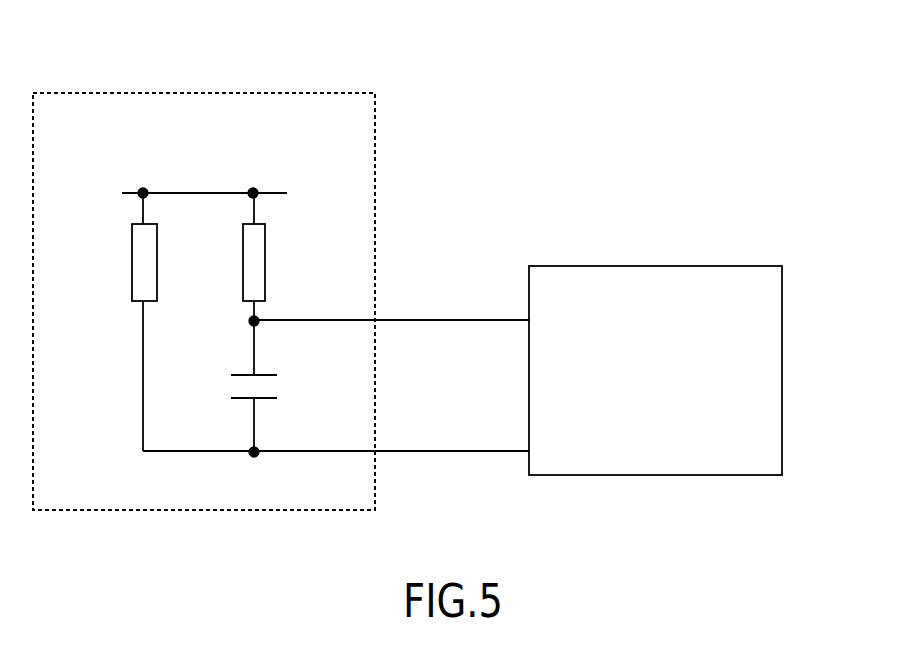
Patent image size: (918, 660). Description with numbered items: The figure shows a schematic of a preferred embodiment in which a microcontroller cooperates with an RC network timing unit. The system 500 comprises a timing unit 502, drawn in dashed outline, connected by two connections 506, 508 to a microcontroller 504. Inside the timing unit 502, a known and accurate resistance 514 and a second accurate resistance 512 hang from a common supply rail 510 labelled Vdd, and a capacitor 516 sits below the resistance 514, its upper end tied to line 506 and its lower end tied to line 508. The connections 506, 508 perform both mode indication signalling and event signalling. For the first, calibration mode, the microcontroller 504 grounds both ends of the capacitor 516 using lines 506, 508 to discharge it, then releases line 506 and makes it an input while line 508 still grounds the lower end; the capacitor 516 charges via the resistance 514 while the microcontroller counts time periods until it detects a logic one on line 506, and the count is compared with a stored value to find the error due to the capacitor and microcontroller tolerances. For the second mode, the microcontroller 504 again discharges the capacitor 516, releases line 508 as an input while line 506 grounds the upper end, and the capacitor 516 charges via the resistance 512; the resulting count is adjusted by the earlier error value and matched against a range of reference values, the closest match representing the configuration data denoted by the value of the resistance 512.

The system 500 is at (718, 193).
The timing unit 502 is at (376, 190).
The microcontroller 504 is at (783, 372).
The connection 506 is at (395, 319).
The connection 508 is at (482, 452).
The Vdd supply rail 510 is at (230, 185).
The resistance 512 is at (131, 268).
The resistance 514 is at (268, 268).
The capacitor 516 is at (287, 389).